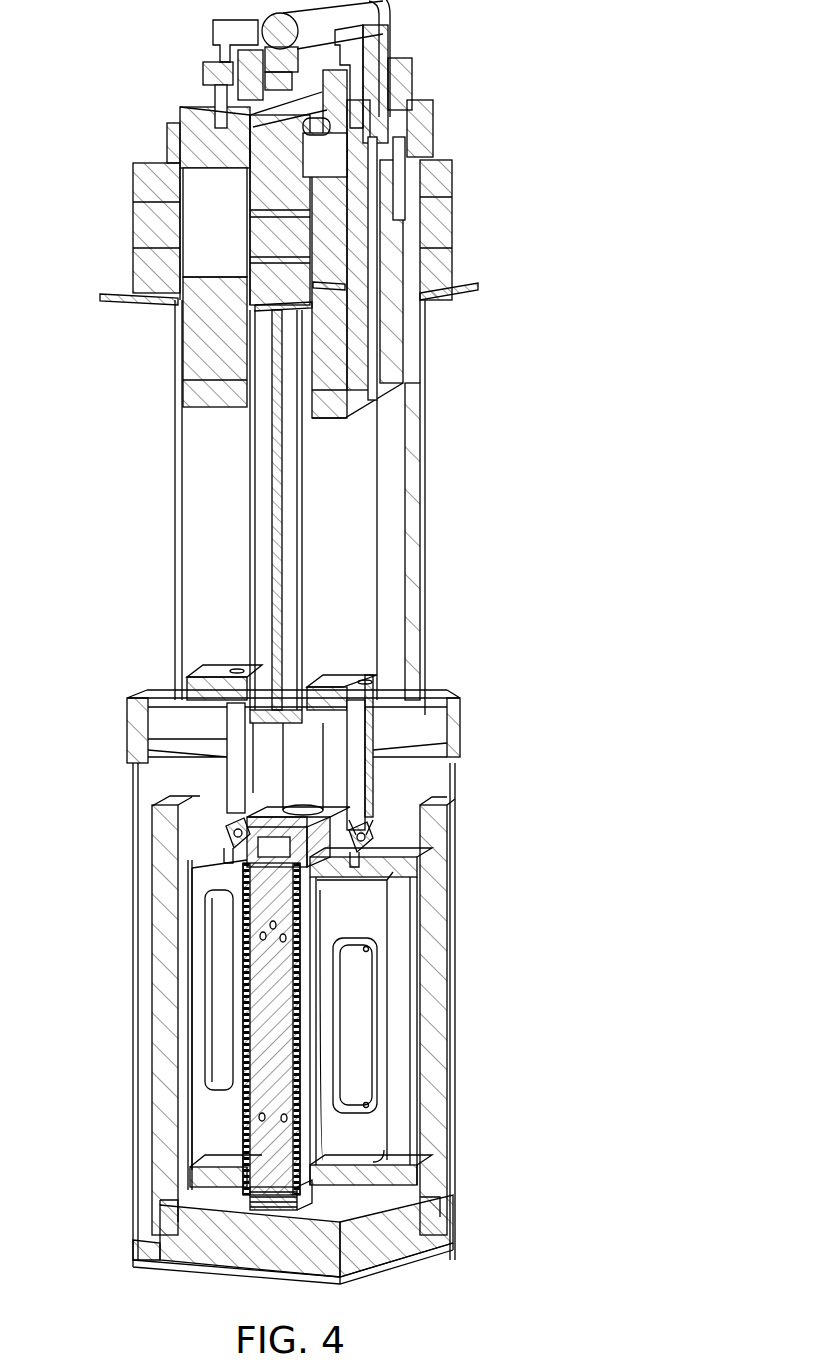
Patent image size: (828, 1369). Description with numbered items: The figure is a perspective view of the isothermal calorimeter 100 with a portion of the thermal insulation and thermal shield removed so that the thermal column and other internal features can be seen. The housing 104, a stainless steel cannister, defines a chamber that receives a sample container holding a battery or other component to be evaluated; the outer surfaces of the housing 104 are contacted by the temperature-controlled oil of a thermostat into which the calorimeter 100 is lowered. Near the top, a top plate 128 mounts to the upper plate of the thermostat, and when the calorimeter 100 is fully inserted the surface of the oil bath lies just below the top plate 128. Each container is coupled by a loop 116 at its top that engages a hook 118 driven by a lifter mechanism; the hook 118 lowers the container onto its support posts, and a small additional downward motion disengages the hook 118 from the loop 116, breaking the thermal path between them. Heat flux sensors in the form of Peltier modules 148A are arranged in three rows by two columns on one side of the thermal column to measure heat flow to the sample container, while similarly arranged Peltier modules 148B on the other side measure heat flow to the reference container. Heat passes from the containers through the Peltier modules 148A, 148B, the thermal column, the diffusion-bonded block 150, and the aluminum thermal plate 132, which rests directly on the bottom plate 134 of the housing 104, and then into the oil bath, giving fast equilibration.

The isothermal calorimeter 100 is at (371, 651).
The housing 104 is at (456, 1110).
The loop 116 is at (228, 828).
The hook 118 is at (366, 836).
The top plate 128 is at (445, 292).
The thermal plate 132 is at (415, 1240).
The bottom plate 134 is at (355, 1275).
The Peltier modules 148A is at (243, 921).
The Peltier modules 148B is at (300, 933).
The diffusion-bonded block 150 is at (244, 1196).